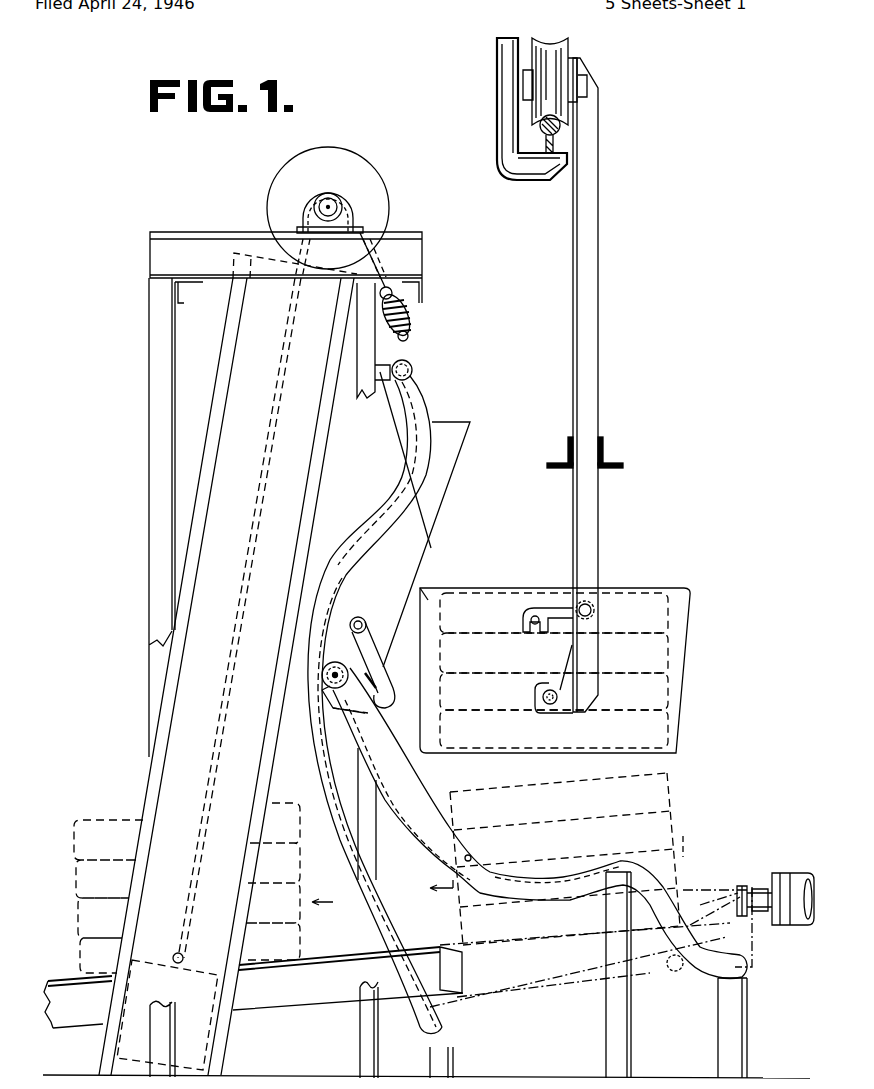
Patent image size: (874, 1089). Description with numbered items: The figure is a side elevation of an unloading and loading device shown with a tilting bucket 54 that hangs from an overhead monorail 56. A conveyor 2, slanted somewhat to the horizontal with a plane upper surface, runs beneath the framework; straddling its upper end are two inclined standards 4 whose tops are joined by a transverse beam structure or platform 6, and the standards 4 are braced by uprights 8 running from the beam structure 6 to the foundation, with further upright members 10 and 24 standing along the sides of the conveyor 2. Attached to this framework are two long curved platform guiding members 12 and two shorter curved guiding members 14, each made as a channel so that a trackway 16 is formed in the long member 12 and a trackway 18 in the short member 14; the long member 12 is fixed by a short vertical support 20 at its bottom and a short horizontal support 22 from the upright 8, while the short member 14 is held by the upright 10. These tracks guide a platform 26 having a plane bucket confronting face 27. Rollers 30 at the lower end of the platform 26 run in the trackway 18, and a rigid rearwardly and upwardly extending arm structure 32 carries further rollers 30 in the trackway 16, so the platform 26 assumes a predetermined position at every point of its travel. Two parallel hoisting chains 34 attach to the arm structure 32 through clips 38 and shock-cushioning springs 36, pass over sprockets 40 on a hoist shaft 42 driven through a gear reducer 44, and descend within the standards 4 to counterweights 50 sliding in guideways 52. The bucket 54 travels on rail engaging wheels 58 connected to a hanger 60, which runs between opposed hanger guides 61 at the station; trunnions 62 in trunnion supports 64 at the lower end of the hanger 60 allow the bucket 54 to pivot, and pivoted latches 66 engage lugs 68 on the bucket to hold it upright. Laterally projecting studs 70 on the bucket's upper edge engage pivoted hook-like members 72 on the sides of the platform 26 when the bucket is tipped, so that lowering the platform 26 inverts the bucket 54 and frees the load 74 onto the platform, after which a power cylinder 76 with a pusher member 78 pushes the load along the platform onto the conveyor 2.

The conveyor 2 is at (267, 1002).
The standards 4 is at (166, 686).
The transverse beam structure or platform 6 is at (190, 243).
The uprights 8 is at (360, 348).
The upright member 10 is at (622, 1058).
The curved platform guiding member 12 is at (296, 727).
The shorter curved platform guiding member 14 is at (405, 792).
The trackway 16 is at (296, 765).
The trackway 18 is at (476, 858).
The short vertical support 20 is at (448, 1058).
The short horizontal support 22 is at (380, 372).
The upright member 24 is at (748, 1058).
The platform 26 is at (440, 493).
The bucket or carrier confronting face 27 is at (438, 523).
The rollers 30 is at (414, 366).
The arm structure 32 is at (384, 442).
The hoisting chains 34 is at (265, 437).
The springs 36 is at (412, 312).
The clips 38 is at (411, 337).
The sprockets 40 is at (350, 195).
The hoist shaft 42 is at (345, 205).
The gear reducer 44 is at (344, 162).
The counterweights 50 is at (192, 973).
The guideways 52 is at (152, 842).
The bucket 54 is at (681, 650).
The monorail 56 is at (540, 130).
The rail engaging wheels 58 is at (556, 53).
The hanger 60 is at (599, 262).
The hanger guides 61 is at (567, 462).
The trunnions 62 is at (543, 694).
The trunnion supports 64 is at (563, 708).
The latches 66 is at (555, 605).
The lugs 68 is at (541, 620).
The studs 70 is at (422, 622).
The hook-like member 72 is at (365, 648).
The load 74 is at (112, 820).
The power cylinder 76 is at (796, 876).
The pusher member 78 is at (743, 884).